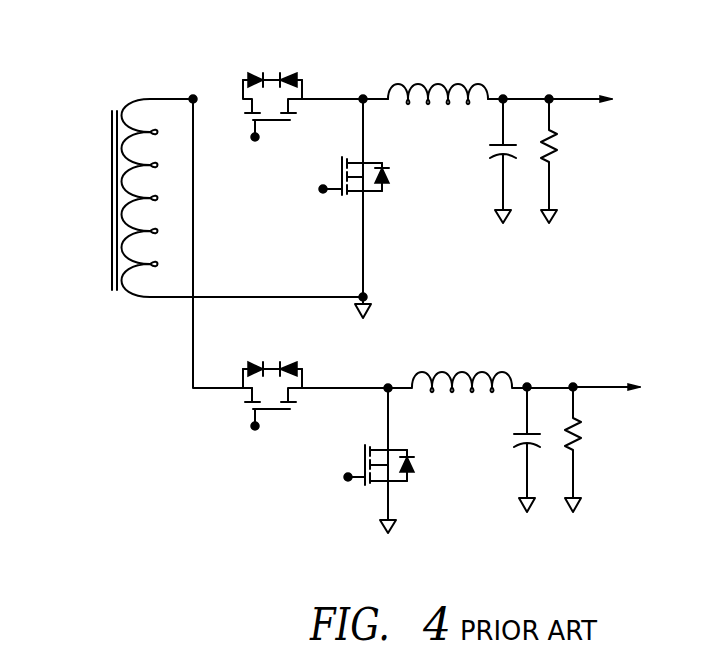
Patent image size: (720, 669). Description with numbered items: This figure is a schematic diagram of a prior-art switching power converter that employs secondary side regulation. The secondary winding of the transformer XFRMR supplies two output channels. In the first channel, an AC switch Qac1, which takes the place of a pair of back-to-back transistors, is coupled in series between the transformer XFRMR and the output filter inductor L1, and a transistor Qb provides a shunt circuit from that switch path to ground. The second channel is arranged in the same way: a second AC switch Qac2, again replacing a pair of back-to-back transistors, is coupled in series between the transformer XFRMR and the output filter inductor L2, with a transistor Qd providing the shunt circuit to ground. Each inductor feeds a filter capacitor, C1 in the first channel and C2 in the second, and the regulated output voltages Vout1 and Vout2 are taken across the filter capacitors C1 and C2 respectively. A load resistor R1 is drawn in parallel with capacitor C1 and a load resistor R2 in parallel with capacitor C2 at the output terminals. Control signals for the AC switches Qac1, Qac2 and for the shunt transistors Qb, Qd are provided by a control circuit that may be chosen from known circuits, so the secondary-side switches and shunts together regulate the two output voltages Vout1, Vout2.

The transformer XFRMR is at (93, 198).
The AC switch Qac1 is at (276, 76).
The AC switch Qac2 is at (275, 391).
The transistor Qb is at (338, 198).
The transistor Qd is at (362, 492).
The output filter inductor L1 is at (438, 77).
The output filter inductor L2 is at (462, 366).
The filter capacitor C1 is at (484, 159).
The filter capacitor C2 is at (508, 447).
The first load resistor R1 is at (565, 159).
The second load resistor R2 is at (590, 447).
The regulated output voltage Vout1 is at (617, 95).
The regulated output voltage Vout2 is at (642, 384).